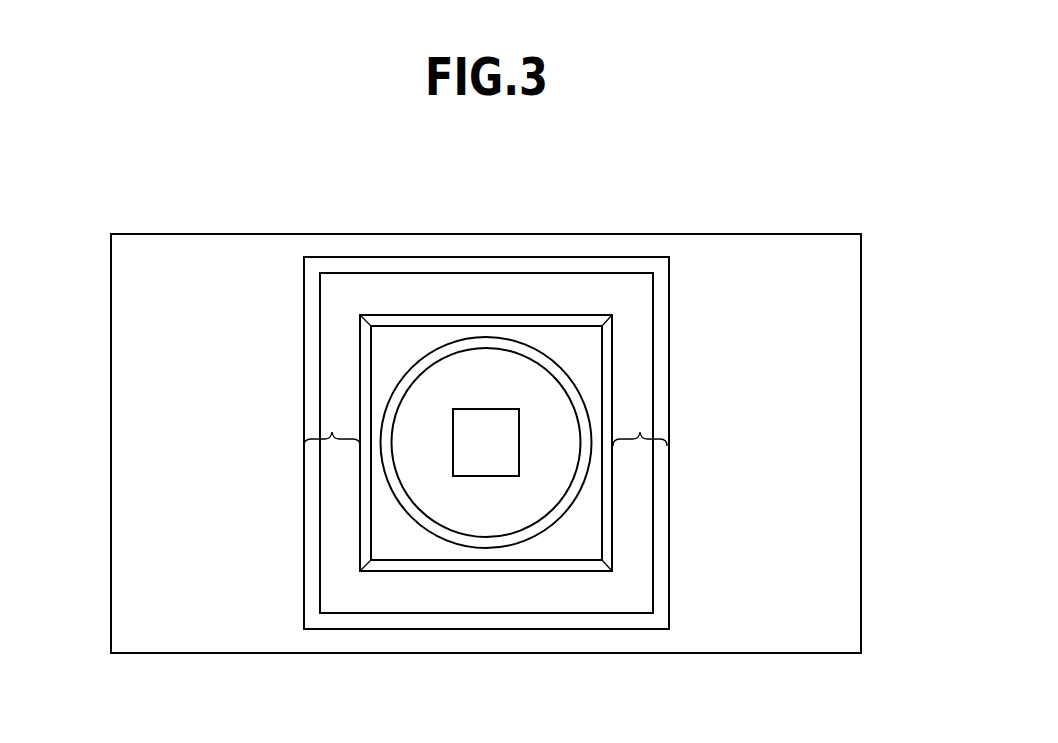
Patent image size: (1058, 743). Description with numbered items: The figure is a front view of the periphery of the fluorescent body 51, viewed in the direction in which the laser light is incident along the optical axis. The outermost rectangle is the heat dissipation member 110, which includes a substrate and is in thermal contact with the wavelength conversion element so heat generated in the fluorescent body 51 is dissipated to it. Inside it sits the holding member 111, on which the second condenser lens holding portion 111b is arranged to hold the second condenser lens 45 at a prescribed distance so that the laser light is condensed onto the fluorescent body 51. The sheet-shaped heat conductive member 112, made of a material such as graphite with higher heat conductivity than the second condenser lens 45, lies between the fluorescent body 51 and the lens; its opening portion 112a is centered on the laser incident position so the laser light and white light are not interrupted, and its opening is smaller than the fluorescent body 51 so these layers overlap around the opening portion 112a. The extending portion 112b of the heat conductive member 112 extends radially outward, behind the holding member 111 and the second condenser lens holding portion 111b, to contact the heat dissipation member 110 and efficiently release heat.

The heat dissipation member 110 is at (733, 254).
The holding member 111 is at (618, 273).
The second condenser lens holding portion 111b is at (637, 348).
The heat conductive member 112 is at (507, 510).
The opening portion 112a is at (471, 476).
The extending portion 112b is at (640, 434).
The second condenser lens 45 is at (533, 348).
The fluorescent body 51 is at (483, 427).